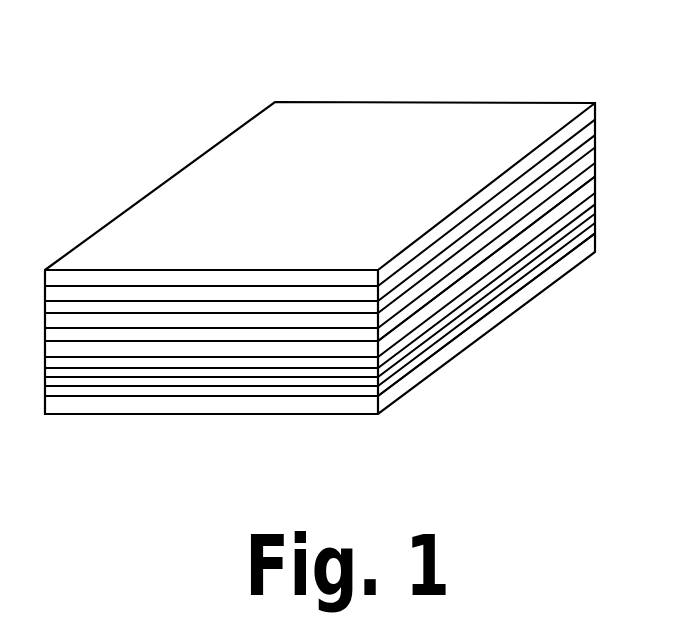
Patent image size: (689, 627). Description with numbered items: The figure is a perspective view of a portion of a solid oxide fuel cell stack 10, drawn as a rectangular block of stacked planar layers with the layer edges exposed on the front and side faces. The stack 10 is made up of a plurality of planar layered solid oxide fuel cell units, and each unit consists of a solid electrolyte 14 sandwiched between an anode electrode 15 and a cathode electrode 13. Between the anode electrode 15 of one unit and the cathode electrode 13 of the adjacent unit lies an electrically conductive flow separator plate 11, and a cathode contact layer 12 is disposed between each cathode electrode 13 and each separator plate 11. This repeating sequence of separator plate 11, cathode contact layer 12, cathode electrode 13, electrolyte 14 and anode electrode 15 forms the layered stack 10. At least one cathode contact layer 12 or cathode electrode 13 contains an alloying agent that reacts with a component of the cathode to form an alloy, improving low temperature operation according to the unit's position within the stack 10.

The stack 10 is at (158, 74).
The electrically conductive flow separator plate 11 is at (445, 128).
The cathode contact layer 12 is at (598, 162).
The cathode electrode 13 is at (600, 150).
The solid electrolyte 14 is at (600, 148).
The anode electrode 15 is at (597, 140).